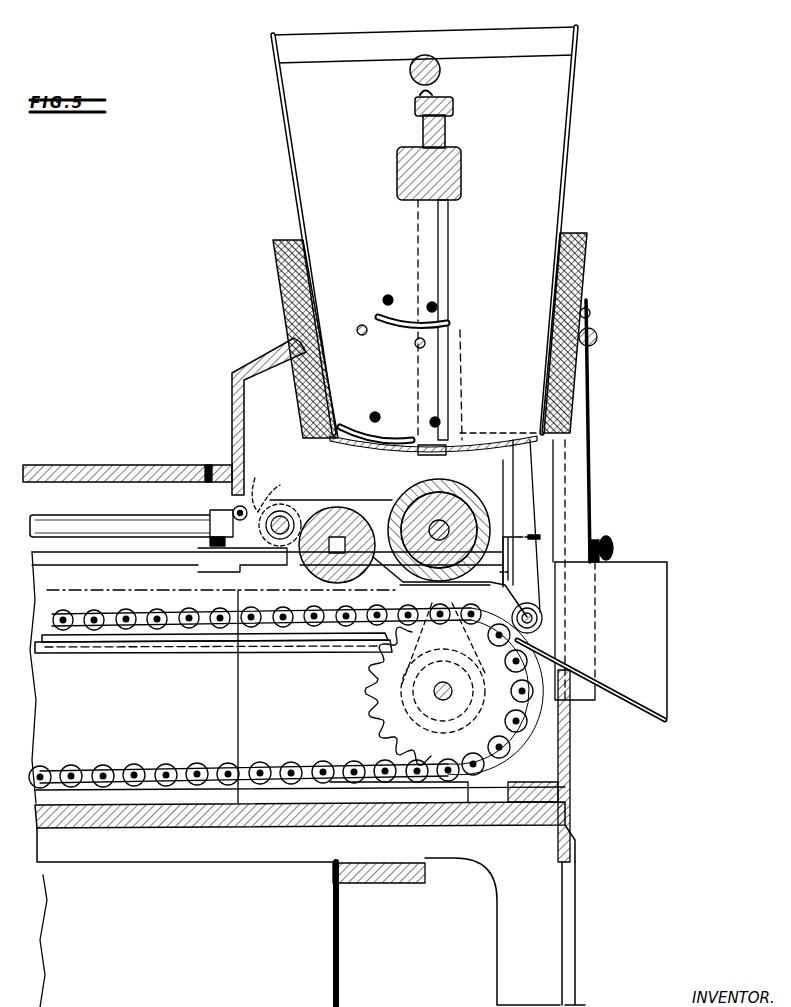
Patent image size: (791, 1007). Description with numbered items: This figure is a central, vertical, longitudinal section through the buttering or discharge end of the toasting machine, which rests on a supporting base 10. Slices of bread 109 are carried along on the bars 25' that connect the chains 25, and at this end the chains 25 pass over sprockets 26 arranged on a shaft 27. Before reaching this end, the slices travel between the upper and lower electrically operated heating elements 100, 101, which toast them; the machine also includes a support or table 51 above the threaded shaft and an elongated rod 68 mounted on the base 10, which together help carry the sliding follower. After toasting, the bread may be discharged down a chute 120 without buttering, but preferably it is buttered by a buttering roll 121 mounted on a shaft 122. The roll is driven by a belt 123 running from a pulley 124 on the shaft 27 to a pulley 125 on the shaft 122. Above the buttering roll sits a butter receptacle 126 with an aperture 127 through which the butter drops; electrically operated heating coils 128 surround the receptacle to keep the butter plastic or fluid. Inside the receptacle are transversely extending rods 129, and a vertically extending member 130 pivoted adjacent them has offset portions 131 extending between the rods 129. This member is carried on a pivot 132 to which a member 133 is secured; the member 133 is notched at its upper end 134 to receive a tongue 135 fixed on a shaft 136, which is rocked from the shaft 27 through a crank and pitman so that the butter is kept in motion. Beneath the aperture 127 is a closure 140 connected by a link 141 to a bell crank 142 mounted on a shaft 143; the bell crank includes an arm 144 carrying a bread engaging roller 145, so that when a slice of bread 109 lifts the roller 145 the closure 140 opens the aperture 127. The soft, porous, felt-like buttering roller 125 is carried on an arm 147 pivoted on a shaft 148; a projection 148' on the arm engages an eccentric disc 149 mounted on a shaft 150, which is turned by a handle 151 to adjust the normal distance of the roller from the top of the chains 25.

The supporting base 10 is at (566, 826).
The chains 25 is at (286, 696).
The bars 25' is at (195, 696).
The sprockets 26 is at (380, 737).
The shaft 27 is at (436, 696).
The support or table 51 is at (75, 465).
The elongated rod 68 is at (76, 500).
The upper heating element 100 is at (118, 568).
The lower heating element 101 is at (63, 655).
The slice of bread 109 is at (265, 652).
The chute 120 is at (640, 705).
The buttering roll 121 is at (512, 515).
The shaft 122 is at (465, 512).
The belt 123 is at (395, 652).
The pulley 124 is at (478, 722).
The pulley / buttering roller 125 is at (470, 490).
The butter receptacle 126 is at (556, 174).
The aperture 127 is at (440, 452).
The heating coils 128 is at (290, 293).
The transversely extending rods 129 is at (390, 296).
The vertically extending member 130 is at (448, 219).
The offset portions 131 is at (398, 330).
The pivot 132 is at (462, 176).
The member 133 is at (440, 142).
The notched upper end 134 is at (452, 100).
The tongue 135 is at (421, 96).
The shaft 136 is at (412, 62).
The closure 140 is at (438, 456).
The link 141 is at (470, 433).
The bell crank 142 is at (530, 470).
The shaft 143 is at (545, 612).
The arm 144 is at (380, 582).
The bread engaging roller 145 is at (310, 570).
The arm 147 is at (316, 500).
The shaft 148 is at (289, 507).
The projection 148' is at (242, 559).
The eccentric disc 149 is at (258, 490).
The shaft 150 is at (232, 512).
The handle 151 is at (215, 550).